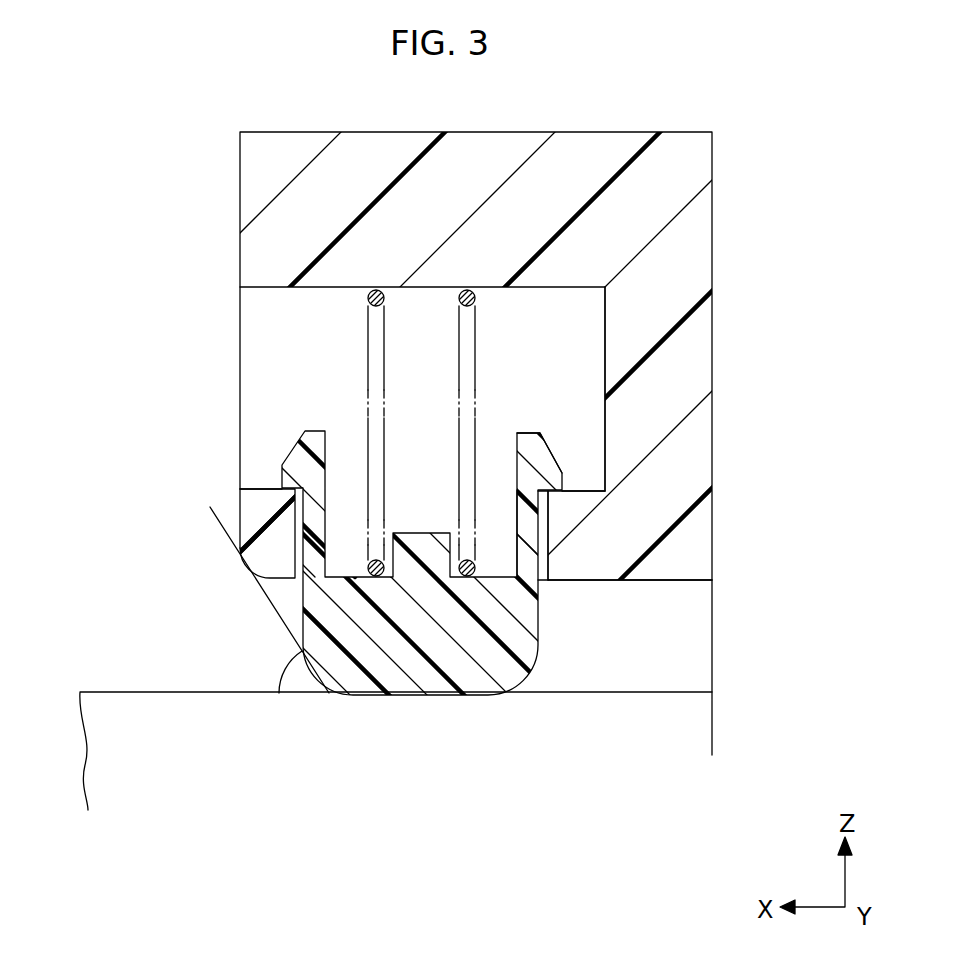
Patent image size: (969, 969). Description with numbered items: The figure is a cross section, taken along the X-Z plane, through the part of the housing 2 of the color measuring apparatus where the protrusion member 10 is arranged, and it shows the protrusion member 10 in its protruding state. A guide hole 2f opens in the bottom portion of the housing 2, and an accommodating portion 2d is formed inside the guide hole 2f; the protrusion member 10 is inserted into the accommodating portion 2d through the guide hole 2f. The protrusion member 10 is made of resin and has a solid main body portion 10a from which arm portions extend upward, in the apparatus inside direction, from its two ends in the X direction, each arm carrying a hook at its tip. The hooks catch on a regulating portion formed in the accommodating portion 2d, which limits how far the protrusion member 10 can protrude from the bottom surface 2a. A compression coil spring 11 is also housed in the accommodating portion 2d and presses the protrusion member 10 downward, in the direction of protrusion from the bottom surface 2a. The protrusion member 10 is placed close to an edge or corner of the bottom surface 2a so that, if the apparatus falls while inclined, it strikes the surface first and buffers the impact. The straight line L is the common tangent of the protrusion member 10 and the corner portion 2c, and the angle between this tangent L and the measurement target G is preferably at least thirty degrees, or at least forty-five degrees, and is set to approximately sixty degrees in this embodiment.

The housing 2 is at (240, 207).
The bottom surface 2a is at (660, 582).
The corner portion 2c is at (262, 580).
The accommodating portion 2d is at (582, 353).
The guide hole 2f is at (548, 590).
The protrusion member 10 is at (530, 667).
The main body portion 10a is at (503, 623).
The compression coil spring 11 is at (372, 335).
The straight line L is at (215, 520).
The measurement target G is at (115, 692).